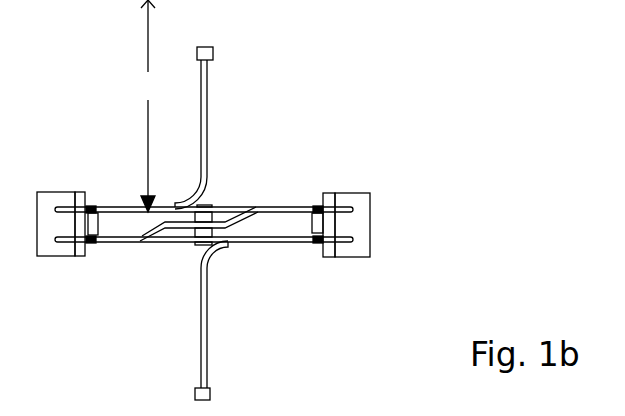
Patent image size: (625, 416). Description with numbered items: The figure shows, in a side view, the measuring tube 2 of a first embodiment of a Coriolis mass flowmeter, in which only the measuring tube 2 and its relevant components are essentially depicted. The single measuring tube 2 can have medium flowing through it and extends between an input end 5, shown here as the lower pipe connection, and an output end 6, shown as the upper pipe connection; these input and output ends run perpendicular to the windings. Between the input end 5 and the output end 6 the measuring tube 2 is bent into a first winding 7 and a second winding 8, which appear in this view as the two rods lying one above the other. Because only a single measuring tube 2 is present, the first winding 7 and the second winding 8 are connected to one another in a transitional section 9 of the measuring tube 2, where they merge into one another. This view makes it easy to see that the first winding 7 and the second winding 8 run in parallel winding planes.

The measuring tube 2 is at (207, 183).
The input end 5 is at (212, 388).
The output end 6 is at (213, 52).
The first winding 7 is at (118, 243).
The second winding 8 is at (127, 208).
The transitional section 9 is at (148, 106).